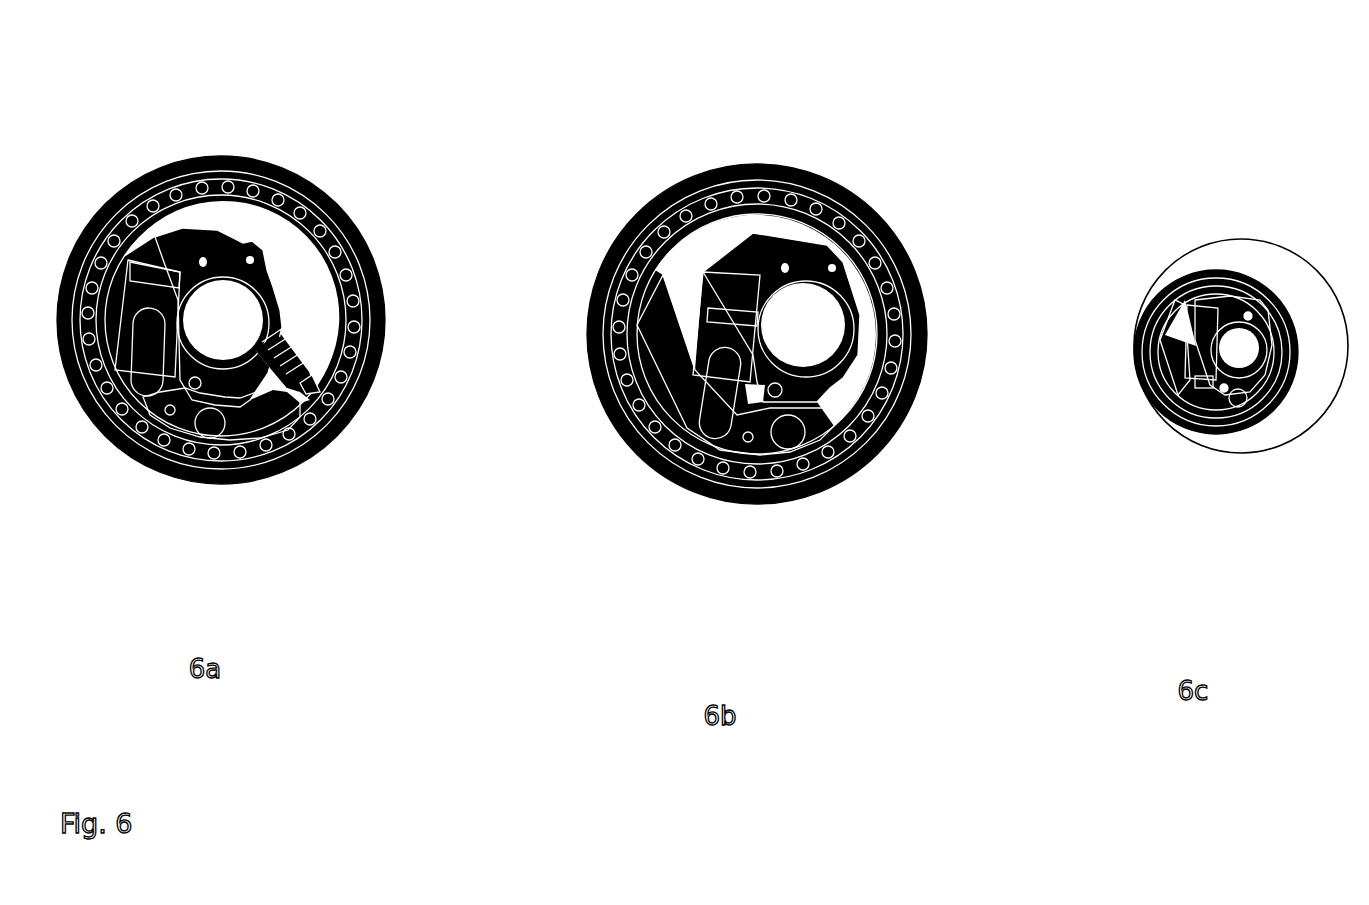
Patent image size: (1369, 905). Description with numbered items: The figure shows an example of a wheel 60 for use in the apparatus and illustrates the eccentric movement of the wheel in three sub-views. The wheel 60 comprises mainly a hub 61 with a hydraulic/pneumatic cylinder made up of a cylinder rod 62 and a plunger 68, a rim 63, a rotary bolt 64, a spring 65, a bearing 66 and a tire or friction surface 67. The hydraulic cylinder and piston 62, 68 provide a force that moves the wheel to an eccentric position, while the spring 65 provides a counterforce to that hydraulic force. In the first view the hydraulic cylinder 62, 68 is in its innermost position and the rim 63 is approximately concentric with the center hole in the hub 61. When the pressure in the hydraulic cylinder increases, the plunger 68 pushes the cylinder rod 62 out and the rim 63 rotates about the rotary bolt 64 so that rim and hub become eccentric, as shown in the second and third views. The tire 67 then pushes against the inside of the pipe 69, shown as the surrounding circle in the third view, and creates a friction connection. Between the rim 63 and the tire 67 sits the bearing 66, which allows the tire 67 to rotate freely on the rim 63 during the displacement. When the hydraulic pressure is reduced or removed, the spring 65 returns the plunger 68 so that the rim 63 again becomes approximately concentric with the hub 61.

The wheel 60 is at (861, 231).
The hub 61 is at (560, 268).
The cylinder rod 62 is at (436, 450).
The rim 63 is at (558, 329).
The rotary bolt 64 is at (537, 421).
The spring 65 is at (623, 422).
The bearing 66 is at (491, 288).
The tire/friction surface 67 is at (536, 330).
The plunger 68 is at (437, 221).
The pipe 69 is at (1241, 300).